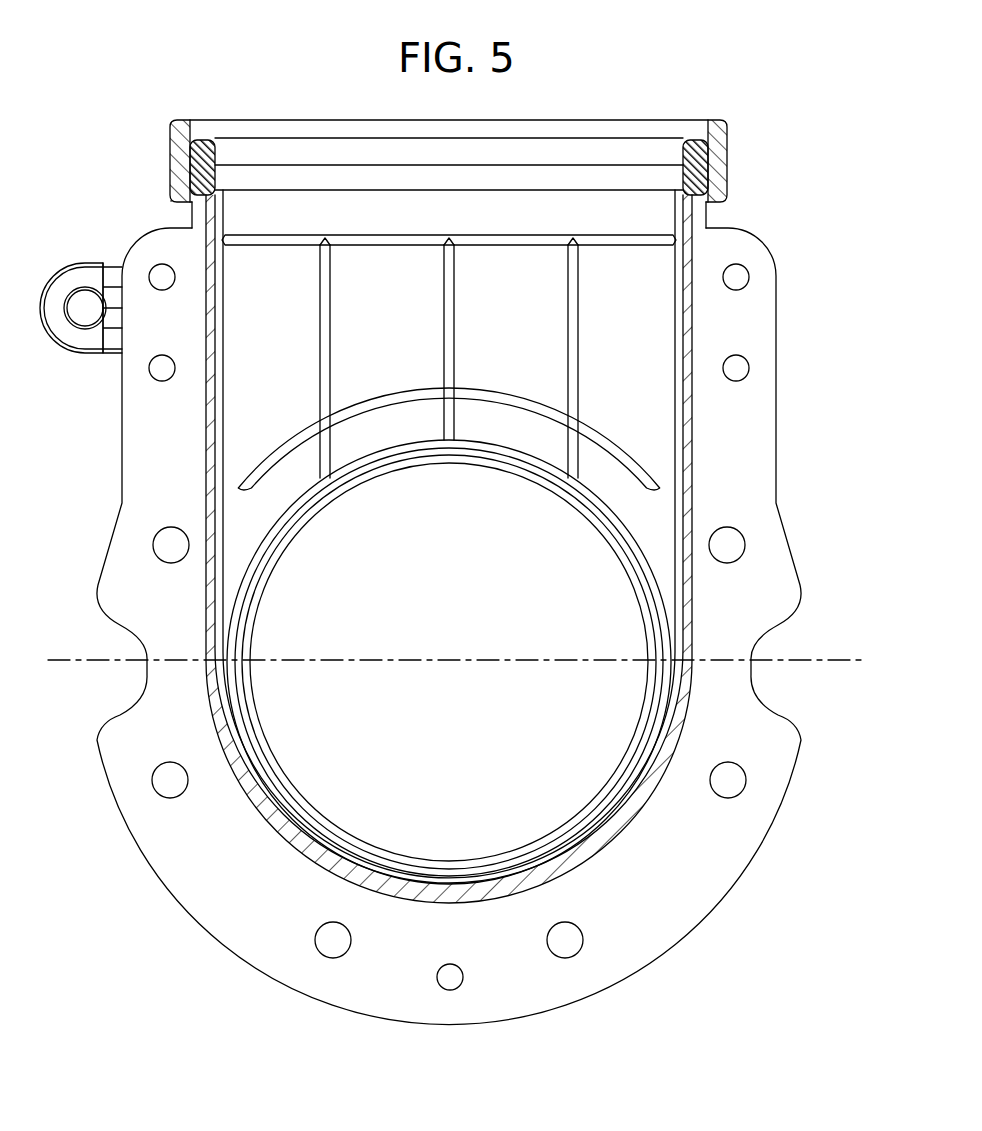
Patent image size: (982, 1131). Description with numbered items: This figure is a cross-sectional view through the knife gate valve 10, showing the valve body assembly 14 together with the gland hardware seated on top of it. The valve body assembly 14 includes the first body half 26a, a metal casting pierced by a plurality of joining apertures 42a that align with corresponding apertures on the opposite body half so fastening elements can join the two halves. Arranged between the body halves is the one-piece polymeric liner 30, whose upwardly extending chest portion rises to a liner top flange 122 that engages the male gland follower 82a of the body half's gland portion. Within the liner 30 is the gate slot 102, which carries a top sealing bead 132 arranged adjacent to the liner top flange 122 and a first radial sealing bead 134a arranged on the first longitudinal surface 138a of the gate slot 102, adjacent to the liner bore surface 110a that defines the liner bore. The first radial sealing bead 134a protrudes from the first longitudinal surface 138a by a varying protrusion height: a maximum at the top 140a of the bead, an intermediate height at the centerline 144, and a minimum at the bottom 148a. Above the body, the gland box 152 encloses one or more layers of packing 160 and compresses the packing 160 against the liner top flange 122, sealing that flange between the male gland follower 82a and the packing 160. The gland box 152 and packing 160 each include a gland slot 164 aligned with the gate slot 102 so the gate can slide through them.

The knife gate valve 10 is at (488, 512).
The valve body assembly 14 is at (78, 98).
The first body half 26a is at (832, 506).
The liner 30 is at (200, 447).
The joining apertures 42a is at (160, 368).
The male gland follower 82a is at (700, 215).
The gate slot 102 is at (218, 332).
The liner bore surface 110a is at (448, 457).
The liner top flange 122 is at (705, 192).
The top sealing bead 132 is at (514, 240).
The first radial sealing bead 134a is at (477, 450).
The first longitudinal surface 138a is at (482, 328).
The top of the first radial sealing bead 140a is at (430, 470).
The centerline 144 is at (808, 660).
The bottom of the first radial sealing bead 148a is at (447, 853).
The gland box 152 is at (712, 128).
The packing 160 is at (705, 162).
The gland slot 164 is at (215, 166).